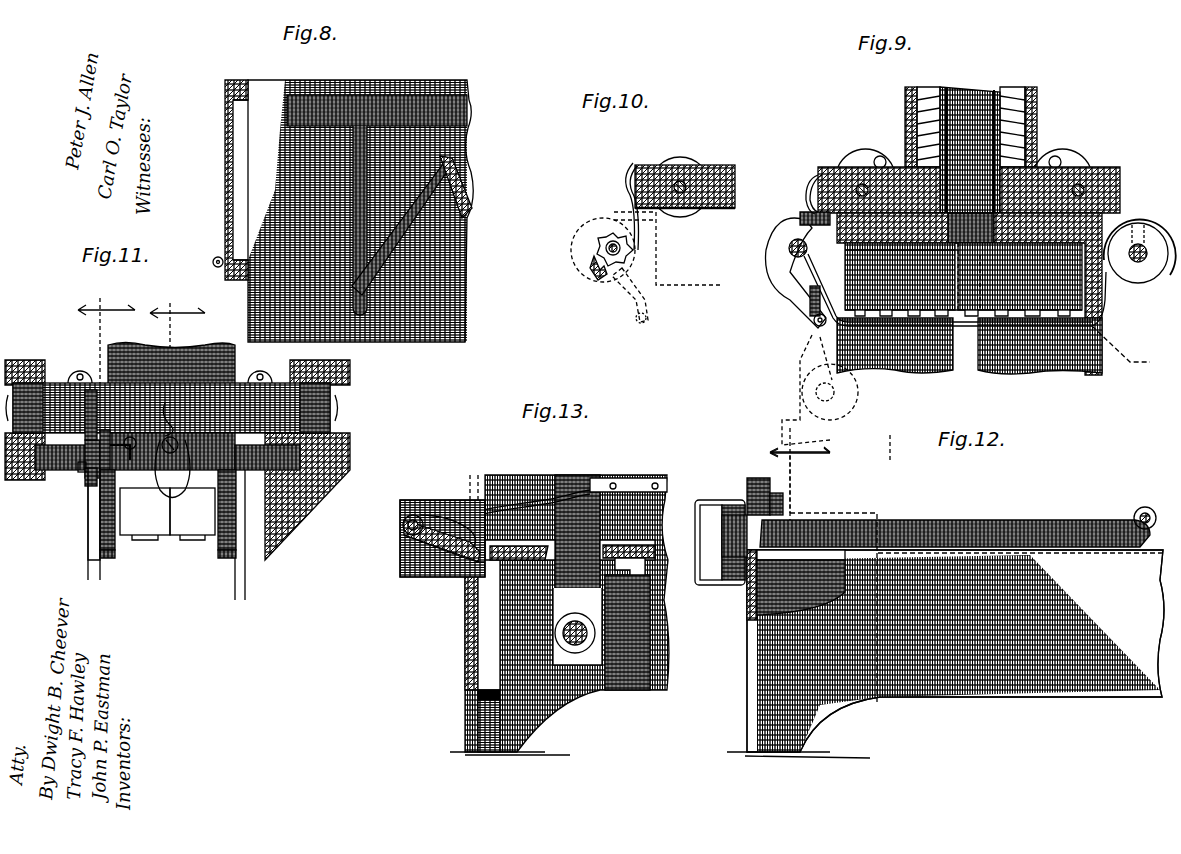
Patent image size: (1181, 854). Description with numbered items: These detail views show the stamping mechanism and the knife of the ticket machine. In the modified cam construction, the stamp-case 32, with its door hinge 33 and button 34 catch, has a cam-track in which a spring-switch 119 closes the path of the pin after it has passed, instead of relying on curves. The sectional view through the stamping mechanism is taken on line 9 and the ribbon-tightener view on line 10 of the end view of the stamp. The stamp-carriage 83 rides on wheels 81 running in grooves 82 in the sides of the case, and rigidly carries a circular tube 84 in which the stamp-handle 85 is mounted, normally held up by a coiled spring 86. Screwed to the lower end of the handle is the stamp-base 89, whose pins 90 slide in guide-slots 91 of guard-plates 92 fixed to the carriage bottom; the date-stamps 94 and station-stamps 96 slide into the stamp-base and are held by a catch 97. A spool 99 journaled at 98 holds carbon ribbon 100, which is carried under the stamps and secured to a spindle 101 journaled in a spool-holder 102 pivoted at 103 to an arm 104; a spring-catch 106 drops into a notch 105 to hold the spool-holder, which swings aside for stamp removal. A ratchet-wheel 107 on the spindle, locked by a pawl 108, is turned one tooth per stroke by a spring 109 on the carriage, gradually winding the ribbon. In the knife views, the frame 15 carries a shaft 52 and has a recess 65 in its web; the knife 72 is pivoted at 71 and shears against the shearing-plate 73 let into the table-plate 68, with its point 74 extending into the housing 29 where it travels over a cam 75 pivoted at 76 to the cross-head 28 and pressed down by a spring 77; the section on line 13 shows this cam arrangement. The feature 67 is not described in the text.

In FIG. 11, the section line 9 is at (177, 359).
In FIG. 11, the section line 10 is at (106, 357).
In FIG. 9, the section line 13 is at (800, 476).
In FIG. 12, the section line 13 is at (791, 473).
In FIG. 13, the rectangular frame 15 is at (465, 662).
In FIG. 12, the rectangular frame 15 is at (932, 668).
In FIG. 13, the cross-head 28 is at (442, 577).
In FIG. 12, the cross-head 28 is at (712, 520).
In FIG. 13, the housing 29 is at (660, 565).
In FIG. 12, the housing 29 is at (700, 565).
In FIG. 8, the stamp-case 32 is at (238, 80).
In FIG. 8, the hinge 33 is at (218, 257).
In FIG. 8, the button 34 is at (225, 100).
In FIG. 13, the shaft 52 is at (580, 650).
In FIG. 13, the recess 65 is at (648, 582).
In FIG. 12, the recess 65 is at (801, 582).
In FIG. 13, the cap 67 is at (630, 547).
In FIG. 13, the table-plate 68 is at (505, 560).
In FIG. 12, the pivot 71 is at (1143, 507).
In FIG. 13, the knife 72 is at (540, 620).
In FIG. 12, the knife 72 is at (988, 520).
In FIG. 13, the shearing-plate 73 is at (528, 505).
In FIG. 12, the shearing-plate 73 is at (784, 500).
In FIG. 12, the point 74 is at (722, 582).
In FIG. 13, the cam 75 is at (425, 548).
In FIG. 12, the cam 75 is at (700, 538).
In FIG. 13, the pivot 76 is at (402, 526).
In FIG. 12, the pivot 76 is at (748, 522).
In FIG. 13, the spring 77 is at (460, 512).
In FIG. 12, the spring 77 is at (730, 505).
In FIG. 10, the wheels 81 is at (680, 158).
In FIG. 9, the wheels 81 is at (852, 165).
In FIG. 11, the wheels 81 is at (48, 360).
In FIG. 11, the grooves 82 is at (44, 362).
In FIG. 10, the stamp-carriage 83 is at (722, 165).
In FIG. 9, the stamp-carriage 83 is at (1121, 182).
In FIG. 11, the stamp-carriage 83 is at (172, 408).
In FIG. 9, the circular tube 84 is at (1036, 118).
In FIG. 11, the circular tube 84 is at (171, 363).
In FIG. 9, the stamp-handle 85 is at (970, 105).
In FIG. 9, the coiled spring 86 is at (905, 112).
In FIG. 9, the stamp-base 89 is at (1103, 224).
In FIG. 11, the stamp-base 89 is at (210, 445).
In FIG. 9, the pins 90 is at (963, 279).
In FIG. 11, the pins 90 is at (45, 455).
In FIG. 9, the guide-slots 91 is at (968, 368).
In FIG. 9, the guard-plates 92 is at (969, 346).
In FIG. 11, the guard-plates 92 is at (95, 582).
In FIG. 11, the date-stamps 94 is at (192, 514).
In FIG. 9, the station-stamps 96 is at (963, 276).
In FIG. 11, the station-stamps 96 is at (145, 514).
In FIG. 11, the catch 97 is at (168, 411).
In FIG. 9, the journal 98 is at (1142, 262).
In FIG. 9, the spool 99 is at (1128, 272).
In FIG. 9, the carbon ribbon 100 is at (783, 280).
In FIG. 11, the carbon ribbon 100 is at (130, 437).
In FIG. 12, the carbon ribbon 100 is at (977, 584).
In FIG. 10, the spindle 101 is at (620, 252).
In FIG. 9, the spindle 101 is at (790, 246).
In FIG. 11, the spindle 101 is at (185, 467).
In FIG. 10, the spool-holder 102 is at (580, 247).
In FIG. 9, the spool-holder 102 is at (790, 272).
In FIG. 11, the spool-holder 102 is at (228, 536).
In FIG. 9, the pivot 103 is at (815, 323).
In FIG. 10, the arm 104 is at (624, 298).
In FIG. 9, the arm 104 is at (812, 296).
In FIG. 11, the arm 104 is at (232, 560).
In FIG. 10, the notch 105 is at (613, 222).
In FIG. 9, the notch 105 is at (800, 216).
In FIG. 11, the notch 105 is at (104, 440).
In FIG. 12, the notch 105 is at (814, 447).
In FIG. 10, the spring-catch 106 is at (648, 225).
In FIG. 9, the spring-catch 106 is at (812, 200).
In FIG. 10, the ratchet-wheel 107 is at (607, 243).
In FIG. 11, the ratchet-wheel 107 is at (100, 442).
In FIG. 10, the pawl 108 is at (592, 270).
In FIG. 11, the pawl 108 is at (86, 480).
In FIG. 10, the spring 109 is at (633, 168).
In FIG. 9, the spring 109 is at (818, 178).
In FIG. 11, the spring 109 is at (88, 412).
In FIG. 8, the spring-switch 119 is at (435, 226).